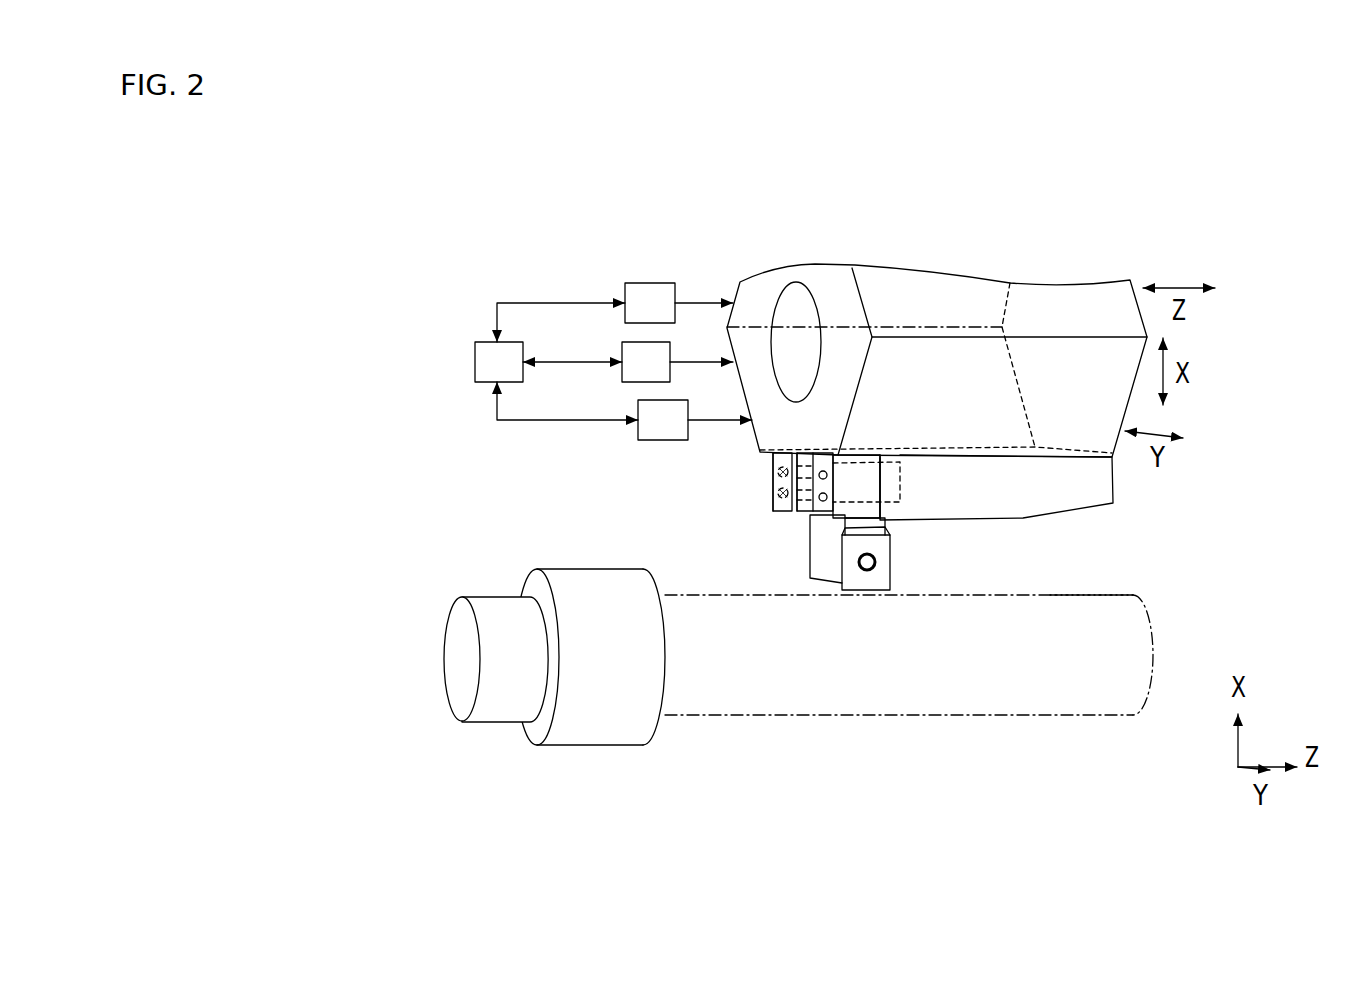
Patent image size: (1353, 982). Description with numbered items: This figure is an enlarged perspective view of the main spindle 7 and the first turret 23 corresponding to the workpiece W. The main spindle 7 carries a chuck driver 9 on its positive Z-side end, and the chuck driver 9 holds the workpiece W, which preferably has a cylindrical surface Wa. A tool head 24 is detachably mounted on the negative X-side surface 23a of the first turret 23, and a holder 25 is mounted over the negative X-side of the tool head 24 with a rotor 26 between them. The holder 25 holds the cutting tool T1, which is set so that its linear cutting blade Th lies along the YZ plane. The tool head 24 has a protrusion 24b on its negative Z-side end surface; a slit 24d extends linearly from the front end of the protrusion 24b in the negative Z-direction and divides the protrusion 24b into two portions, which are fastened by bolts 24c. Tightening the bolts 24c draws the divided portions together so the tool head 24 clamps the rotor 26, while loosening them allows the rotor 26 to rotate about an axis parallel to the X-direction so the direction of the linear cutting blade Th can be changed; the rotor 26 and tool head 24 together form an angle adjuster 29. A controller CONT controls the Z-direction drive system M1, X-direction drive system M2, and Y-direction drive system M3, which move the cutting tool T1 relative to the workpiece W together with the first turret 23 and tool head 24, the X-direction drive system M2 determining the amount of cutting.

The main spindle 7 is at (482, 598).
The chuck driver 9 is at (570, 580).
The first turret 23 is at (750, 288).
The negative X-side surface 23a is at (773, 471).
The tool head 24 is at (1113, 500).
The protrusion 24b is at (803, 513).
The bolts 24c is at (778, 493).
The slit 24d is at (793, 453).
The holder 25 is at (822, 557).
The rotor 26 is at (900, 503).
The angle adjuster 29 is at (993, 538).
The cutting tool T1 is at (884, 592).
The linear cutting blade Th is at (863, 592).
The workpiece W is at (1100, 717).
The cylindrical surface Wa is at (1082, 595).
The controller CONT is at (478, 377).
The Z-direction drive system M1 is at (615, 312).
The X-direction drive system M2 is at (628, 362).
The Y-direction drive system M3 is at (624, 411).